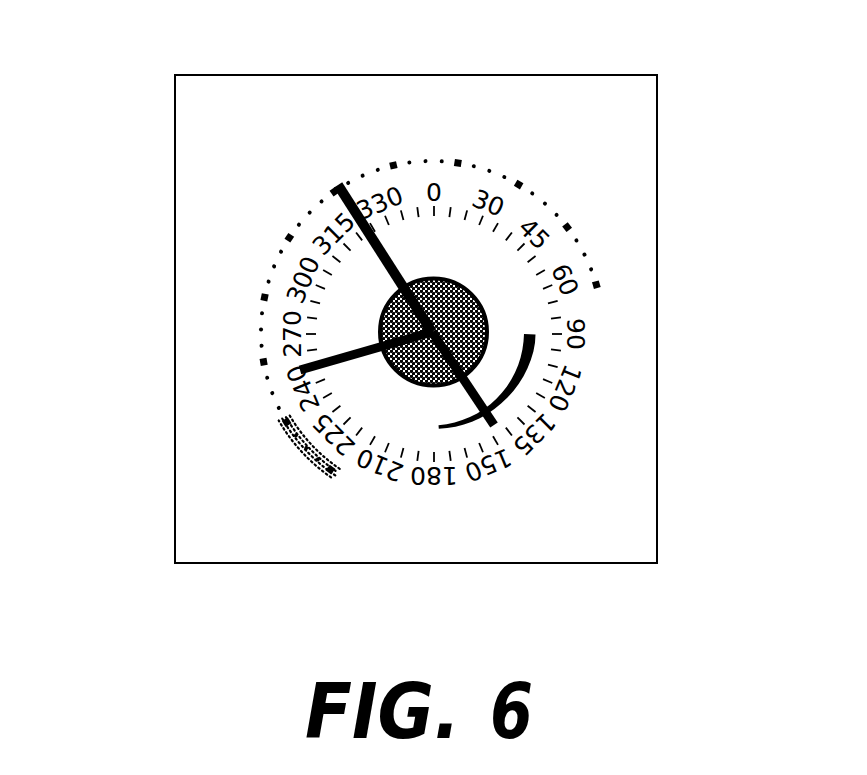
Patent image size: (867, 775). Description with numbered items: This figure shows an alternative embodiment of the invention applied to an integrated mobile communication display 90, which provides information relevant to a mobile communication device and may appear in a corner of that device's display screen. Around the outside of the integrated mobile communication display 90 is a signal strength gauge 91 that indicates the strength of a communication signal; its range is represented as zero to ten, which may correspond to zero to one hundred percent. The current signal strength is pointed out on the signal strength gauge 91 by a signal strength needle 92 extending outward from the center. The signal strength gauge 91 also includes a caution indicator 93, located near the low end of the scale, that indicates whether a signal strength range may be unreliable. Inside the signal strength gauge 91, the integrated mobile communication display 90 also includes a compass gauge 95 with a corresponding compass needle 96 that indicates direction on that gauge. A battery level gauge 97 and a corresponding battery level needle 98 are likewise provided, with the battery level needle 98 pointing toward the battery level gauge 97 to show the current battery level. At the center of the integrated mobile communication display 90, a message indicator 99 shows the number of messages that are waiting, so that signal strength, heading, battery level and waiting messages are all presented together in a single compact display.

The integrated mobile communication display 90 is at (181, 614).
The signal strength gauge 91 is at (267, 223).
The signal strength needle 92 is at (352, 190).
The caution indicator 93 is at (305, 467).
The compass gauge 95 is at (262, 325).
The compass needle 96 is at (290, 452).
The battery level gauge 97 is at (508, 396).
The battery level needle 98 is at (470, 388).
The message indicator 99 is at (488, 318).